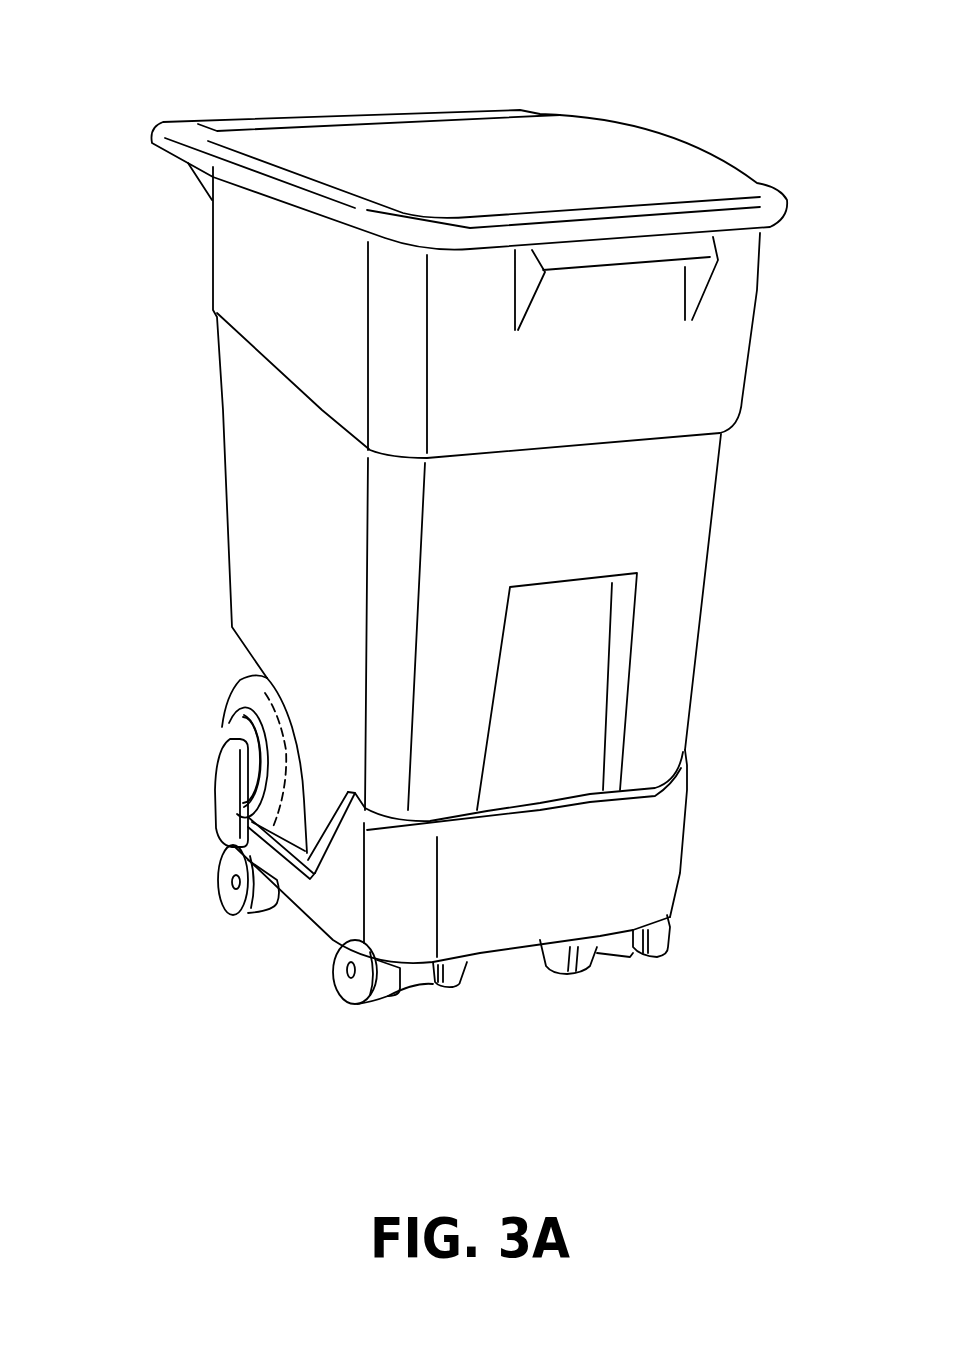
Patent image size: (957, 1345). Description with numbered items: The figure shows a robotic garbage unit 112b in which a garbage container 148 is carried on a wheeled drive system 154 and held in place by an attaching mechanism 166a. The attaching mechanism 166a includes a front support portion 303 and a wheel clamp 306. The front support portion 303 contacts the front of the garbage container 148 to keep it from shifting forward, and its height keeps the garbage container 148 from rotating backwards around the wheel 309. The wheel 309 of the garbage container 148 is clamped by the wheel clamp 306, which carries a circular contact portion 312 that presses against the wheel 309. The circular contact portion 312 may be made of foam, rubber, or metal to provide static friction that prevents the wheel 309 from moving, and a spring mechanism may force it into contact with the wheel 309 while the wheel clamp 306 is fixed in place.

The robotic garbage unit 112b is at (790, 50).
The garbage container 148 is at (698, 480).
The front support portion 303 is at (667, 813).
The drive system 154 is at (663, 940).
The attaching mechanism 166a is at (97, 767).
The wheel 309 is at (230, 693).
The circular contact portion 312 is at (228, 720).
The wheel clamp 306 is at (228, 760).